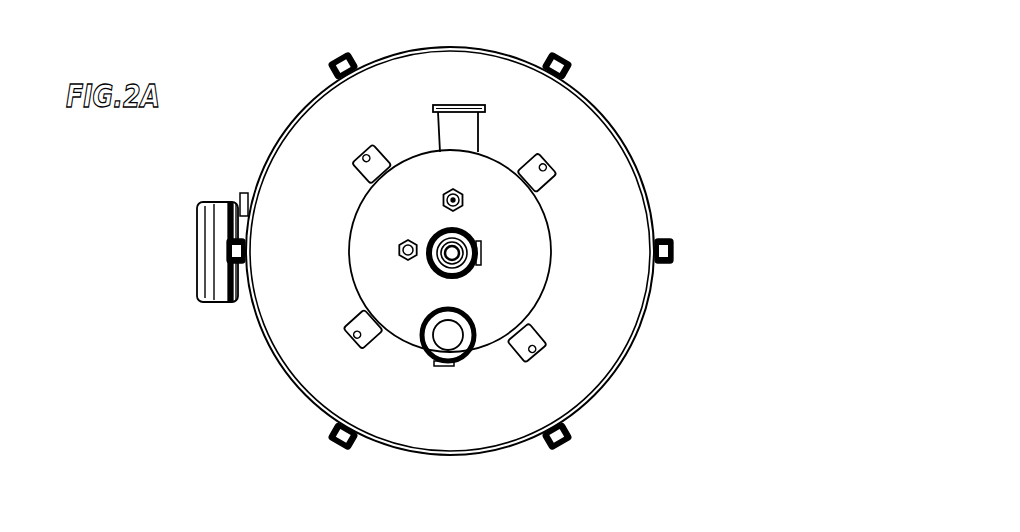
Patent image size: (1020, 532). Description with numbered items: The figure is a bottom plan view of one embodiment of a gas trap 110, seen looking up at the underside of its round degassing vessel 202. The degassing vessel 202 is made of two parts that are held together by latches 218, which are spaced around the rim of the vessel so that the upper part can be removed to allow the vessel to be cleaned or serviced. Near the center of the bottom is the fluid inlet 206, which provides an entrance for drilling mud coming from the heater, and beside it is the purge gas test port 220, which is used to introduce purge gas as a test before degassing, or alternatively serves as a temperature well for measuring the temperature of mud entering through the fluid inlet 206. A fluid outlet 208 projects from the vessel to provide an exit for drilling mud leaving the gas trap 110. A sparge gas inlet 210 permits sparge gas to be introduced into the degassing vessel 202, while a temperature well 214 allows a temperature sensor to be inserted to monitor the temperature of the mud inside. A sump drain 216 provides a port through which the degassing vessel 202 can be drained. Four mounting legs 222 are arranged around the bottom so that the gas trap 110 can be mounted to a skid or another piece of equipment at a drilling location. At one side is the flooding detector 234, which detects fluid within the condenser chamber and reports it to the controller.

The gas trap 110 is at (772, 79).
The degassing vessel 202 is at (645, 322).
The fluid inlet 206 is at (472, 263).
The fluid outlet 208 is at (480, 128).
The sparge gas inlet 210 is at (465, 201).
The temperature well 214 is at (398, 250).
The sump drain 216 is at (462, 360).
The latches 218 is at (338, 58).
The purge gas test port 220 is at (481, 250).
The mounting legs 222 is at (360, 178).
The flooding detector 234 is at (197, 268).